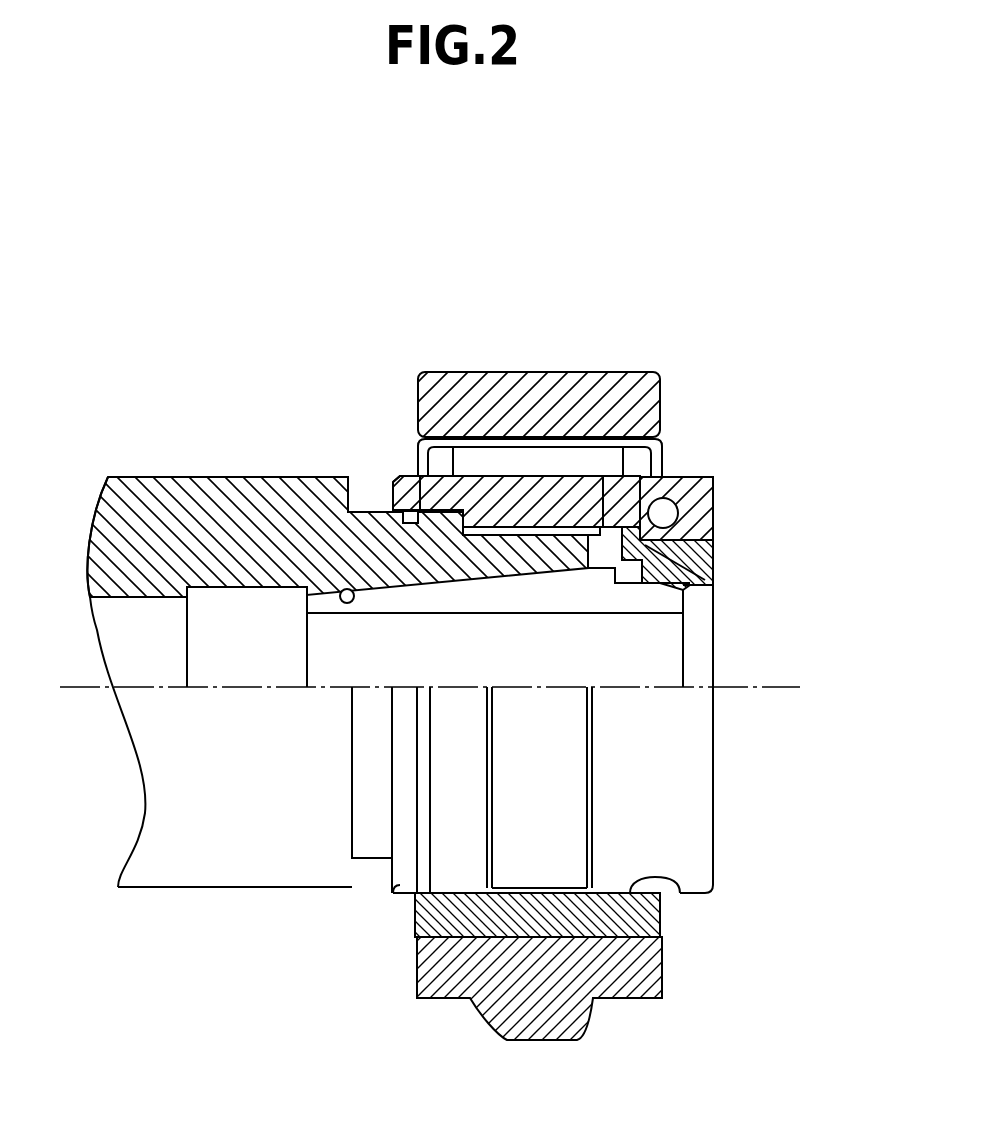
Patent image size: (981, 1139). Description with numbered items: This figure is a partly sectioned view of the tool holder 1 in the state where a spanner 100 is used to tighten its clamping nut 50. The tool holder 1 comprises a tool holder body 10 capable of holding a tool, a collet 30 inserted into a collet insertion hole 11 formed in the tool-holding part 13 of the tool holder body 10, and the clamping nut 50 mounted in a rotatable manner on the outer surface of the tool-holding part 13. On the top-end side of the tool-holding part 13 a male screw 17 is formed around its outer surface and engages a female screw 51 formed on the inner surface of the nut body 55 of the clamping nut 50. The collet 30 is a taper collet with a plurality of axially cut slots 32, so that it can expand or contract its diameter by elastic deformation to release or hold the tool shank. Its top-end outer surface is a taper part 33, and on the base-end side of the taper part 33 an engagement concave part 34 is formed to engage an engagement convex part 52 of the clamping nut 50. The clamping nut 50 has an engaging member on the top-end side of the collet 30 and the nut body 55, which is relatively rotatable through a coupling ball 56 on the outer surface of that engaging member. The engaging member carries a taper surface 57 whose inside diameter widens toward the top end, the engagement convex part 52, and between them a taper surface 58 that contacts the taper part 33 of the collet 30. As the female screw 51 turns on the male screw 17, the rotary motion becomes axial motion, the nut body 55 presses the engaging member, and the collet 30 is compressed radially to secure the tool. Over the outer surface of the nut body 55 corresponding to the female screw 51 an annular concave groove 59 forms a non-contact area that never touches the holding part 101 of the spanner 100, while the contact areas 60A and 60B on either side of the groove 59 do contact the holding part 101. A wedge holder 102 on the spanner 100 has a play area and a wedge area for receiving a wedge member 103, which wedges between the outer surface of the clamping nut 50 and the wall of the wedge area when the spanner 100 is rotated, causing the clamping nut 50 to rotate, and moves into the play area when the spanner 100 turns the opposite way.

The tool holder 1 is at (413, 248).
The tool holder body 10 is at (144, 470).
The collet insertion hole 11 is at (353, 590).
The tool-holding part 13 is at (208, 477).
The male screw 17 is at (501, 413).
The collet 30 is at (667, 600).
The slots 32 is at (430, 607).
The taper part 33 is at (731, 566).
The engagement concave part 34 is at (620, 592).
The clamping nut 50 is at (722, 650).
The female screw 51 is at (512, 525).
The engagement convex part 52 is at (700, 535).
The nut body 55 is at (398, 477).
The coupling ball 56 is at (682, 486).
The taper surface 57 is at (695, 585).
The taper surface 58 is at (700, 578).
The annular concave groove 59 is at (545, 882).
The contact area 60A is at (688, 897).
The contact area 60B is at (433, 907).
The spanner 100 is at (640, 393).
The holding part 101 is at (680, 900).
The wedge holder 102 is at (658, 455).
The wedge member 103 is at (590, 465).